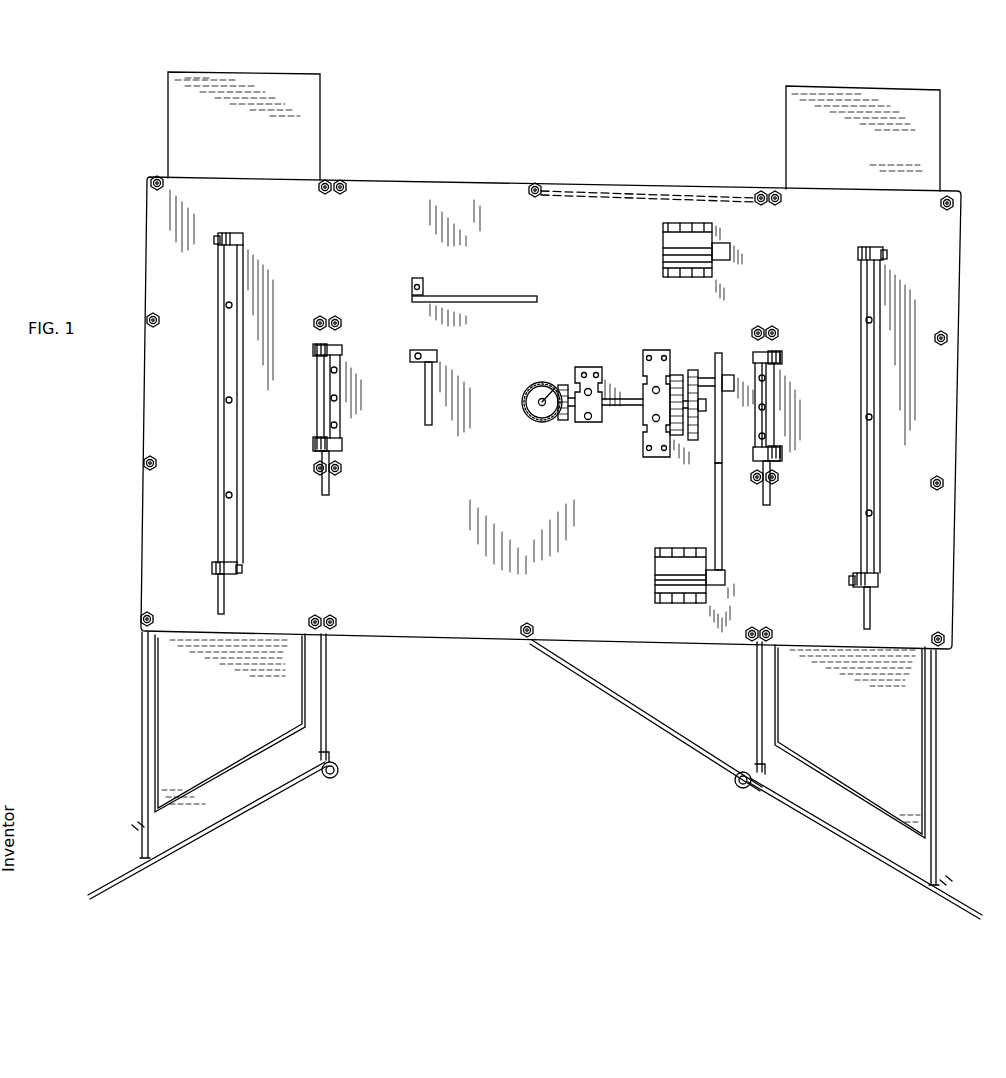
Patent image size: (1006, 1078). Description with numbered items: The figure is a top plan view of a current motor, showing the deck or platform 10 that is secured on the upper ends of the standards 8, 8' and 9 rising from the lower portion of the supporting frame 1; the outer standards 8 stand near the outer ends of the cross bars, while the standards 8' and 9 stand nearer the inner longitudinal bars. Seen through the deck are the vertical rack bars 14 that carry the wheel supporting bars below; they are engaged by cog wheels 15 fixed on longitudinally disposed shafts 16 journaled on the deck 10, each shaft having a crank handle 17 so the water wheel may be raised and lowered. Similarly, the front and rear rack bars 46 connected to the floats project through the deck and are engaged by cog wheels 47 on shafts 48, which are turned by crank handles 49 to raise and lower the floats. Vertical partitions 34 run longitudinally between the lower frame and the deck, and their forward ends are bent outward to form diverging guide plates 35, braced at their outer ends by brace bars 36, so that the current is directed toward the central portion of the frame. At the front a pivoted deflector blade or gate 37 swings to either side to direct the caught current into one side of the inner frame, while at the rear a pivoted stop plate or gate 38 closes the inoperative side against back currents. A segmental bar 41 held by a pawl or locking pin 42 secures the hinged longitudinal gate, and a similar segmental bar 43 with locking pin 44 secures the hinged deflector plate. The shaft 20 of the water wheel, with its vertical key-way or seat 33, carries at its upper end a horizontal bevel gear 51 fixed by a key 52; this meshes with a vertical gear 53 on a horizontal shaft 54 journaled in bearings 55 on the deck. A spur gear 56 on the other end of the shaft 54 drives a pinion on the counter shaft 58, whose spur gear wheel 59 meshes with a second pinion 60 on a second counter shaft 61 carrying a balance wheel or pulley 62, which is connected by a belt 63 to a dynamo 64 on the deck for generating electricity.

The supporting frame 1 is at (554, 131).
The standards 8 is at (545, 411).
The standards 8' is at (558, 410).
The standards 9 is at (344, 182).
The deck or platform 10 is at (148, 510).
The rack bars 14 is at (342, 349).
The cog wheels 15 is at (313, 350).
The shafts 16 is at (326, 388).
The crank handle 17 is at (328, 492).
The shaft 20 is at (532, 395).
The key-way or seat 33 is at (548, 394).
The partitions 34 is at (327, 707).
The guide plates 35 is at (222, 824).
The brace bars 36 is at (142, 740).
The deflector blade or gate 37 is at (640, 702).
The stop plate or gate 38 is at (622, 189).
The segmental bar 41 is at (536, 303).
The pawl or locking pin 42 is at (411, 303).
The segmental bar 43 is at (425, 400).
The pawl or locking pin 44 is at (438, 355).
The rack bars 46 is at (243, 243).
The cog wheels 47 is at (220, 236).
The shafts 48 is at (864, 305).
The crank handles 49 is at (224, 609).
The bevel gear 51 is at (536, 412).
The key 52 is at (562, 418).
The gear 53 is at (572, 388).
The shaft 54 is at (622, 399).
The bearings 55 is at (596, 424).
The spur gear 56 is at (660, 356).
The counter shaft 58 is at (684, 428).
The spur gear wheel 59 is at (690, 372).
The second pinion 60 is at (704, 376).
The second counter shaft 61 is at (731, 392).
The balance wheel or pulley 62 is at (720, 355).
The belt 63 is at (714, 506).
The dynamo 64 is at (663, 250).